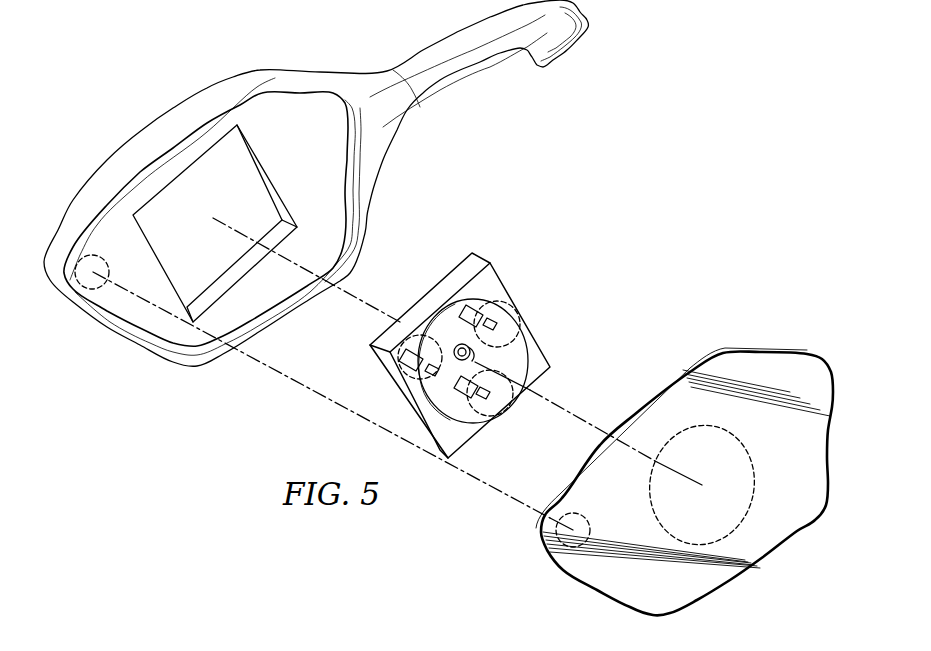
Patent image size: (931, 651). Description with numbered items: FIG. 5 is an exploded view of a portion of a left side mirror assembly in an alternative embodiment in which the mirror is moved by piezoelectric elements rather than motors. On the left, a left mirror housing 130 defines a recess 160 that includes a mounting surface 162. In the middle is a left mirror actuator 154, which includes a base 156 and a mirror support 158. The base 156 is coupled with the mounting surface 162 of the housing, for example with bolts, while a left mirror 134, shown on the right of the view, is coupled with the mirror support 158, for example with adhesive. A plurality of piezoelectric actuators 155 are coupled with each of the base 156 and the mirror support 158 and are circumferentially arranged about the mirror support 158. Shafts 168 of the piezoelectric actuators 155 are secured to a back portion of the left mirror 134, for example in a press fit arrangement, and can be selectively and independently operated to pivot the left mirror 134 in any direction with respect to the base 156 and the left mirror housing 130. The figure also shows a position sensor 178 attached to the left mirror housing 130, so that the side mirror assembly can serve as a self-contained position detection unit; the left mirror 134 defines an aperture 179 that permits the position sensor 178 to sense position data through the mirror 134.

The left mirror housing 130 is at (159, 104).
The mounting surface 162 is at (153, 218).
The recess 160 is at (252, 190).
The position sensor 178 is at (99, 284).
The left mirror actuator 154 is at (464, 325).
The base 156 is at (490, 288).
The mirror support 158 is at (512, 330).
The piezoelectric actuators 155 is at (443, 303).
The shafts 168 is at (413, 340).
The left mirror 134 is at (772, 543).
The aperture 179 is at (590, 531).